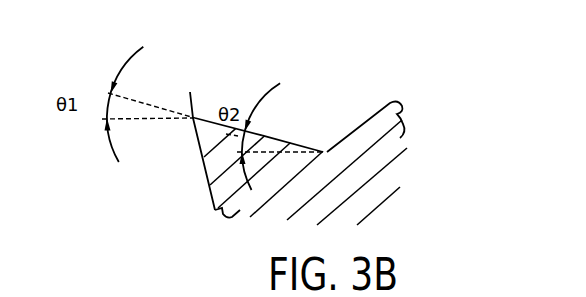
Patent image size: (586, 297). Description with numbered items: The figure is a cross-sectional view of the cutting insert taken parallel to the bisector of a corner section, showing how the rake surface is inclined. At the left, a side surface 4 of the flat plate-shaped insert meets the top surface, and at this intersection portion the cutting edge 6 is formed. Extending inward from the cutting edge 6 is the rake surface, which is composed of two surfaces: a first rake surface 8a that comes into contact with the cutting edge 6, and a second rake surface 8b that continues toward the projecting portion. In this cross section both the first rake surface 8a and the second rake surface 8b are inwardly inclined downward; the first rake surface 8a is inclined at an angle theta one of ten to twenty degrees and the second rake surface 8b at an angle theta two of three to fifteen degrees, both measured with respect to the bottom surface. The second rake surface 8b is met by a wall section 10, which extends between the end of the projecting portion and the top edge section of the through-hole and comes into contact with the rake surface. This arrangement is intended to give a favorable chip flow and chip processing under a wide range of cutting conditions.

The side surface 4 is at (204, 175).
The cutting edge 6 is at (190, 92).
The first rake surface 8a is at (210, 122).
The second rake surface 8b is at (292, 143).
The wall section 10 is at (355, 128).